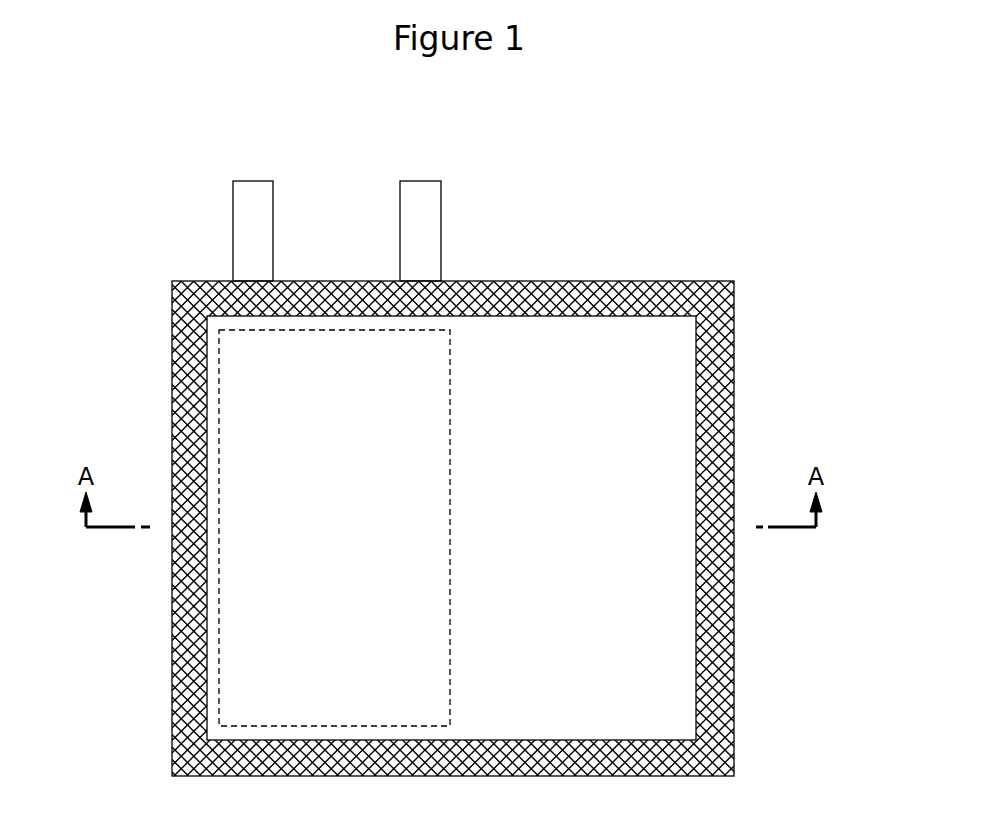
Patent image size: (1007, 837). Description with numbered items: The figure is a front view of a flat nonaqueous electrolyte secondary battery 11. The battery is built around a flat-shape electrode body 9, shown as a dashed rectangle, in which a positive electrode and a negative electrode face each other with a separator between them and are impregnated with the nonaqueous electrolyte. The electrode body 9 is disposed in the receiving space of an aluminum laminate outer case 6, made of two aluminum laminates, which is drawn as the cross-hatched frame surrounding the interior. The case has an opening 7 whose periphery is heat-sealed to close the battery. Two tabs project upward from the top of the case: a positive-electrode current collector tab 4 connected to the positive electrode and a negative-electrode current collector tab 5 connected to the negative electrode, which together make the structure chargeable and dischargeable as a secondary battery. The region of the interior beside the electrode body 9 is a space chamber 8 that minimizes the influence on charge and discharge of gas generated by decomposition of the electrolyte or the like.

The positive-electrode current collector tab 4 is at (262, 212).
The negative-electrode current collector tab 5 is at (430, 212).
The aluminum laminate outer case 6 is at (746, 377).
The opening 7 is at (733, 302).
The space chamber 8 is at (553, 372).
The flat-shape electrode body 9 is at (270, 410).
The nonaqueous electrolyte secondary battery 11 is at (731, 138).